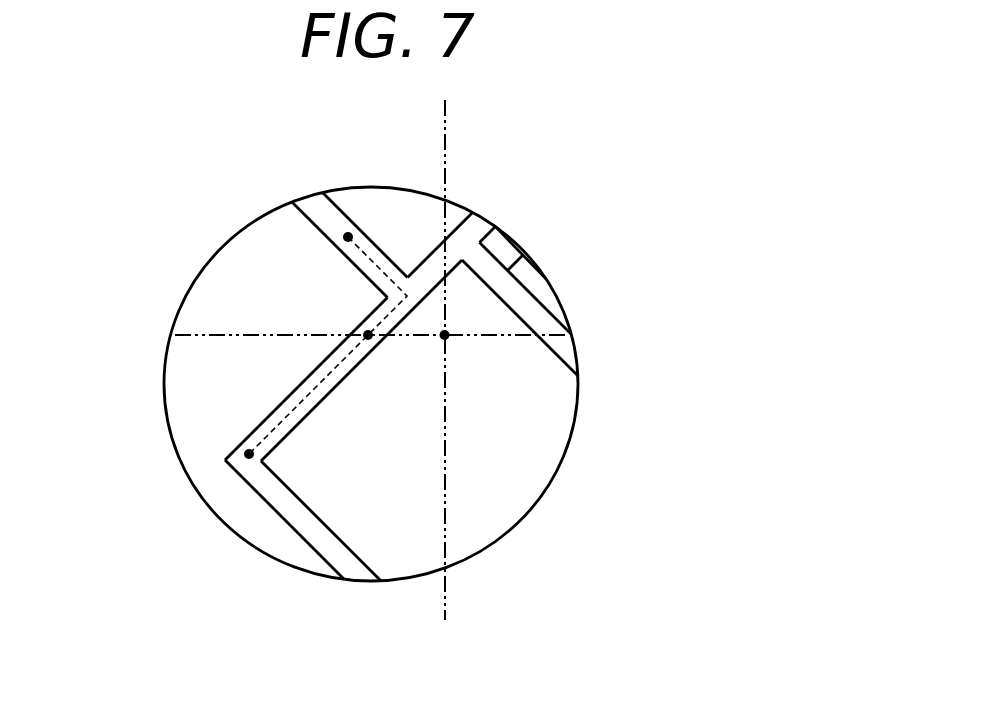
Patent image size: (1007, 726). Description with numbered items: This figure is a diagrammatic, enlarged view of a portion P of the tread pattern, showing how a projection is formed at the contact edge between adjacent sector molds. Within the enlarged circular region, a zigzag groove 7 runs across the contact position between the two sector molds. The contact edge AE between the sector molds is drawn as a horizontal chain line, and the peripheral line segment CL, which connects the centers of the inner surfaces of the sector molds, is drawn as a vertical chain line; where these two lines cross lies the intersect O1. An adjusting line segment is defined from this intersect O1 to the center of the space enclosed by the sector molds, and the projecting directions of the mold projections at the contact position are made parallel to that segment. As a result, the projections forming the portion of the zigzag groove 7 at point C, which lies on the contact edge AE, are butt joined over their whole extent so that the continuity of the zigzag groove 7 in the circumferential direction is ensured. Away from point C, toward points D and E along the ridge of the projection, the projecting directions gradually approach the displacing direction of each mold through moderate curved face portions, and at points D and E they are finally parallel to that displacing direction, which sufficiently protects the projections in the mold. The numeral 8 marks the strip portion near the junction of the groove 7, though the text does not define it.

The portion P is at (257, 216).
The contact edge AE is at (247, 335).
The peripheral line segment CL is at (444, 518).
The connecting strip junction 8 is at (425, 262).
The zigzag groove 7 is at (527, 247).
The intersect O1 is at (444, 335).
The point E is at (326, 240).
The point C is at (367, 332).
The point D is at (237, 425).